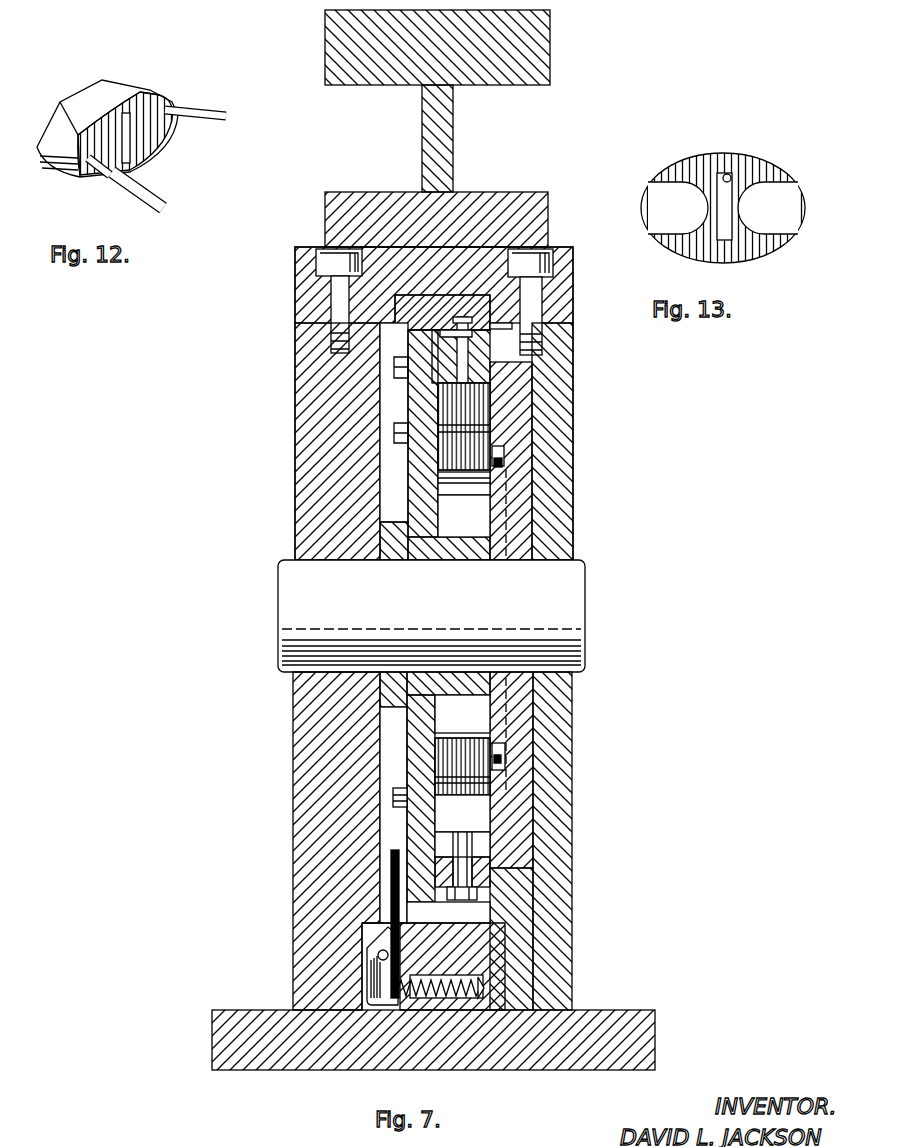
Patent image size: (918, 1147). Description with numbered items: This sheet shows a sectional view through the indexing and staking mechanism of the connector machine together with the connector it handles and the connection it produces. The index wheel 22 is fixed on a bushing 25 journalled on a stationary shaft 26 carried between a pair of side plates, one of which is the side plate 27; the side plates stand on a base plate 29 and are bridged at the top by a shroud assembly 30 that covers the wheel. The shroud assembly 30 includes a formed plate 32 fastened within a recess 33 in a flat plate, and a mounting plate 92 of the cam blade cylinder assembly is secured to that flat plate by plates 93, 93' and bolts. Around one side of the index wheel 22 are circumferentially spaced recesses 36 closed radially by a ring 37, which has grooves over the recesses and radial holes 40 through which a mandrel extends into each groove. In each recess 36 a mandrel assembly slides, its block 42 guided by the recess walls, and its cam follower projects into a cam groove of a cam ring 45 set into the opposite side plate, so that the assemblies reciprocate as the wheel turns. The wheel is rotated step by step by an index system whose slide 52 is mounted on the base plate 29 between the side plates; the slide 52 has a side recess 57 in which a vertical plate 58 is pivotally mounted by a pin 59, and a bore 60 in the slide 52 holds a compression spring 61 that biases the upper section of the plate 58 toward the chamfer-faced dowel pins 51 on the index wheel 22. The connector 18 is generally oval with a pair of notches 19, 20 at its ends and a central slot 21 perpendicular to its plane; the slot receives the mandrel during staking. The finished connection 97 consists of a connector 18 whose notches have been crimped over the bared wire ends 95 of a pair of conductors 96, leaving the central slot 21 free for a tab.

In FIG. 7, the connector 18 is at (450, 337).
In FIG. 12, the connector 18 is at (120, 90).
In FIG. 13, the connector 18 is at (715, 162).
In FIG. 13, the notch 19 is at (672, 223).
In FIG. 13, the notch 20 is at (777, 223).
In FIG. 12, the central slot 21 is at (128, 145).
In FIG. 13, the central slot 21 is at (729, 176).
In FIG. 7, the index wheel 22 is at (413, 748).
In FIG. 7, the bushing 25 is at (398, 560).
In FIG. 7, the stationary shaft 26 is at (290, 598).
In FIG. 7, the side plate 27 is at (312, 387).
In FIG. 7, the base plate 29 is at (607, 1013).
In FIG. 7, the shroud assembly 30 is at (569, 231).
In FIG. 7, the formed plate 32 is at (462, 298).
In FIG. 7, the recess 33 is at (409, 289).
In FIG. 7, the recess 36 is at (472, 525).
In FIG. 7, the ring 37 is at (445, 385).
In FIG. 7, the hole 40 is at (478, 378).
In FIG. 7, the block 42 is at (480, 408).
In FIG. 7, the cam ring 45 is at (522, 503).
In FIG. 7, the dowel pin 51 is at (393, 795).
In FIG. 7, the slide 52 is at (480, 945).
In FIG. 7, the side recess 57 is at (370, 925).
In FIG. 7, the vertical plate 58 is at (391, 890).
In FIG. 7, the pin 59 is at (378, 956).
In FIG. 7, the bore 60 is at (440, 1010).
In FIG. 7, the compression spring 61 is at (436, 978).
In FIG. 7, the mounting plate 92 is at (552, 42).
In FIG. 7, the plate 93 is at (465, 138).
In FIG. 7, the plate 93' is at (435, 198).
In FIG. 12, the bared wire end 95 is at (172, 112).
In FIG. 12, the conductor 96 is at (160, 190).
In FIG. 12, the connection 97 is at (65, 77).